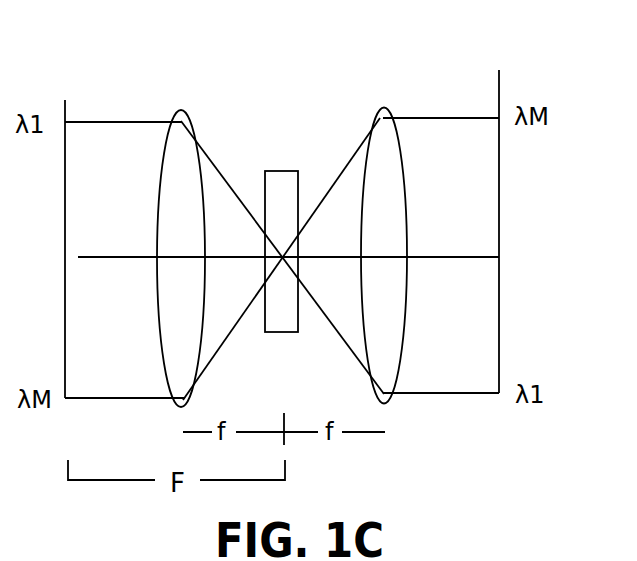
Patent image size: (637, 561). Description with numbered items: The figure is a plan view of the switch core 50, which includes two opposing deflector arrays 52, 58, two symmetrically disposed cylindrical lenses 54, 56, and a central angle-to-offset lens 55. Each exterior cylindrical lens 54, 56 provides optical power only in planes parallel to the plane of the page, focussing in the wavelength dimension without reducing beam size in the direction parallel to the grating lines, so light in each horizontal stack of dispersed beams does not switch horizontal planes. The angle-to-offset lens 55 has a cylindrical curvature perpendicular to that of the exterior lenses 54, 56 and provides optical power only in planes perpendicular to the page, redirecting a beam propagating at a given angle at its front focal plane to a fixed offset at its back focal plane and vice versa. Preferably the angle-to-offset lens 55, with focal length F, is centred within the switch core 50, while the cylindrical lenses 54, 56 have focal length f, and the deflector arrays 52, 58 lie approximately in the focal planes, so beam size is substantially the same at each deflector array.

The switch core 50 is at (471, 455).
The deflector array 52 is at (499, 70).
The cylindrical lens 54 is at (383, 107).
The angle-to-offset lens 55 is at (285, 171).
The cylindrical lens 56 is at (179, 108).
The deflector array 58 is at (65, 100).